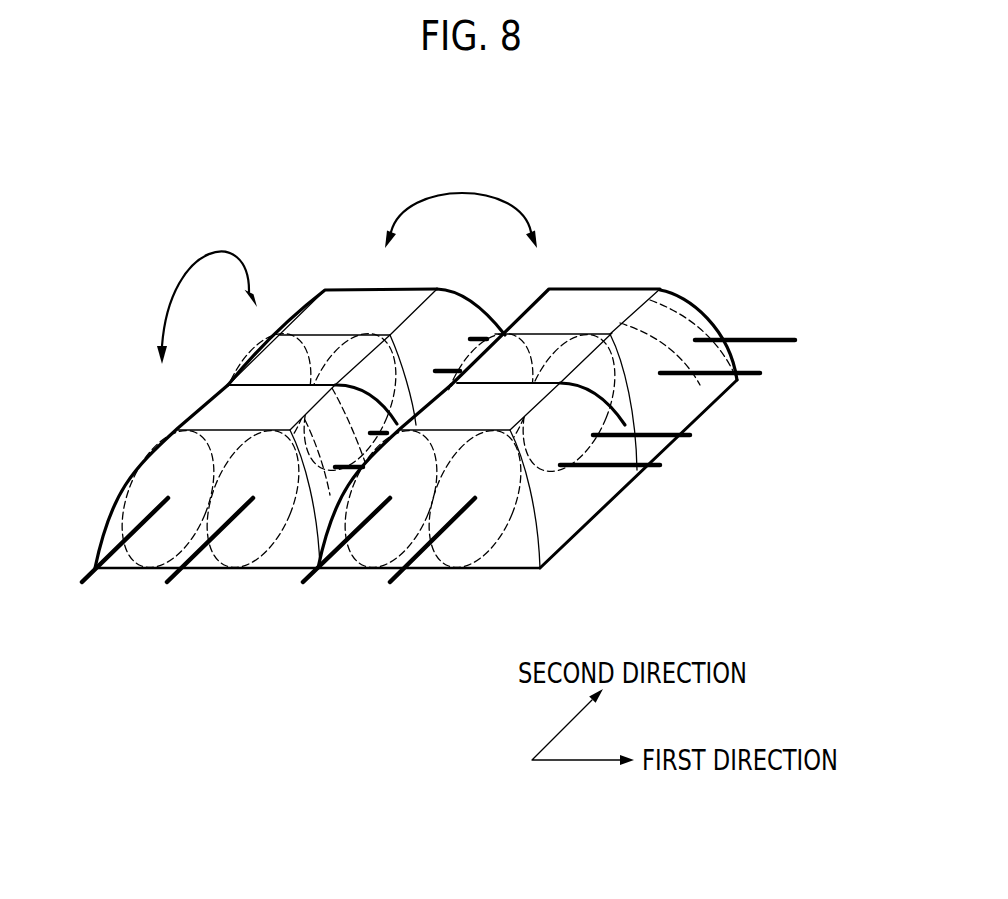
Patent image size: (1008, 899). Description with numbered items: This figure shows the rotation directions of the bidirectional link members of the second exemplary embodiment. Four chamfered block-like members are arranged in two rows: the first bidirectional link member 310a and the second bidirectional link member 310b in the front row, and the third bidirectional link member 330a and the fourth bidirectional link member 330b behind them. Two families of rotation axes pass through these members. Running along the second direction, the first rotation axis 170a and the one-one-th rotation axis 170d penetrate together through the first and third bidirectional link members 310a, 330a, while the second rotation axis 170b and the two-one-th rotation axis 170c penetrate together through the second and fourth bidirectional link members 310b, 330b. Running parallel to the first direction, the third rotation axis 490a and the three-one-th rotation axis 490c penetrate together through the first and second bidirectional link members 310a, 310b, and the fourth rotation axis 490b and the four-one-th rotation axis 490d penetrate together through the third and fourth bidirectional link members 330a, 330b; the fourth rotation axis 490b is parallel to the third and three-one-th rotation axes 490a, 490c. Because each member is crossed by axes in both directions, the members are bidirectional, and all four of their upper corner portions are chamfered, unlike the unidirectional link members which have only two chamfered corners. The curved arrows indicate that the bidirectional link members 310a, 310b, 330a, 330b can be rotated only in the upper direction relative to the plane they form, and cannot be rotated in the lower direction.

The first bidirectional link member 310a is at (193, 407).
The second bidirectional link member 310b is at (570, 530).
The third bidirectional link member 330a is at (343, 295).
The fourth bidirectional link member 330b is at (618, 290).
The first rotation axis 170a is at (187, 580).
The second rotation axis 170b is at (323, 580).
The 2-1-th rotation axis 170c is at (407, 580).
The 1-1-th rotation axis 170d is at (100, 580).
The third rotation axis 490a is at (700, 433).
The fourth rotation axis 490b is at (760, 375).
The 3-1-th rotation axis 490c is at (667, 467).
The 4-1-th rotation axis 490d is at (766, 340).